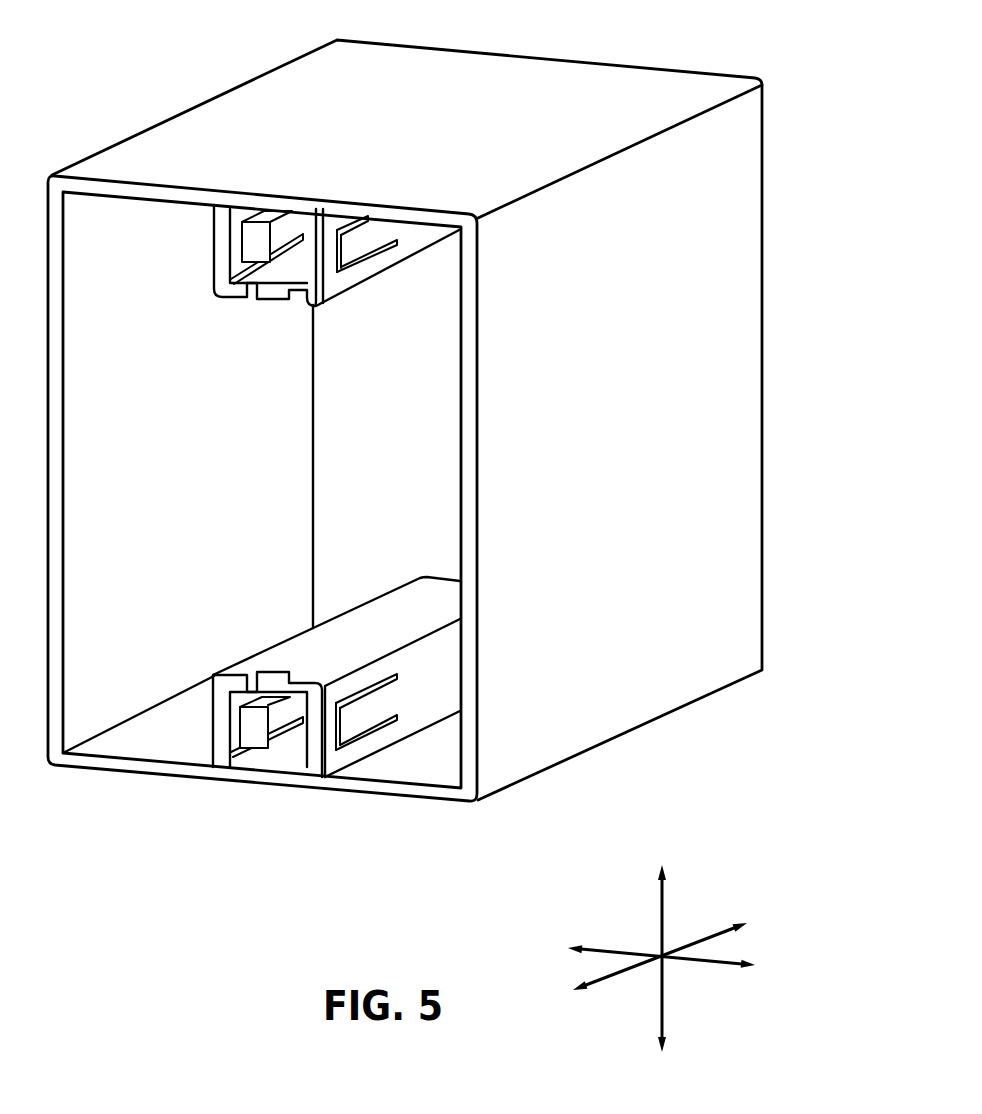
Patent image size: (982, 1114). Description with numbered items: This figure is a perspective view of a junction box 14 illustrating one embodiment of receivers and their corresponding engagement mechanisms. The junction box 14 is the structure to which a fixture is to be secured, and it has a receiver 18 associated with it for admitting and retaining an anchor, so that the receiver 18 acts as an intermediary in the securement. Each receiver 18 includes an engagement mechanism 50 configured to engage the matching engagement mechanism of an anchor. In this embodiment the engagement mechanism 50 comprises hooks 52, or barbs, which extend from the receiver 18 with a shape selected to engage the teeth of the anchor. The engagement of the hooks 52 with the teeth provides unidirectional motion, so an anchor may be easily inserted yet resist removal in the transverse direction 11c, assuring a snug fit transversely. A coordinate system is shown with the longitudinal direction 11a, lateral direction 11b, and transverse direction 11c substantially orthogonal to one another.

The junction box 14 is at (790, 315).
The receiver 18 is at (230, 322).
The engagement mechanism 50 is at (353, 245).
The hooks 52 is at (258, 239).
The longitudinal direction 11a is at (662, 892).
The lateral direction 11b is at (712, 962).
The transverse direction 11c is at (712, 937).